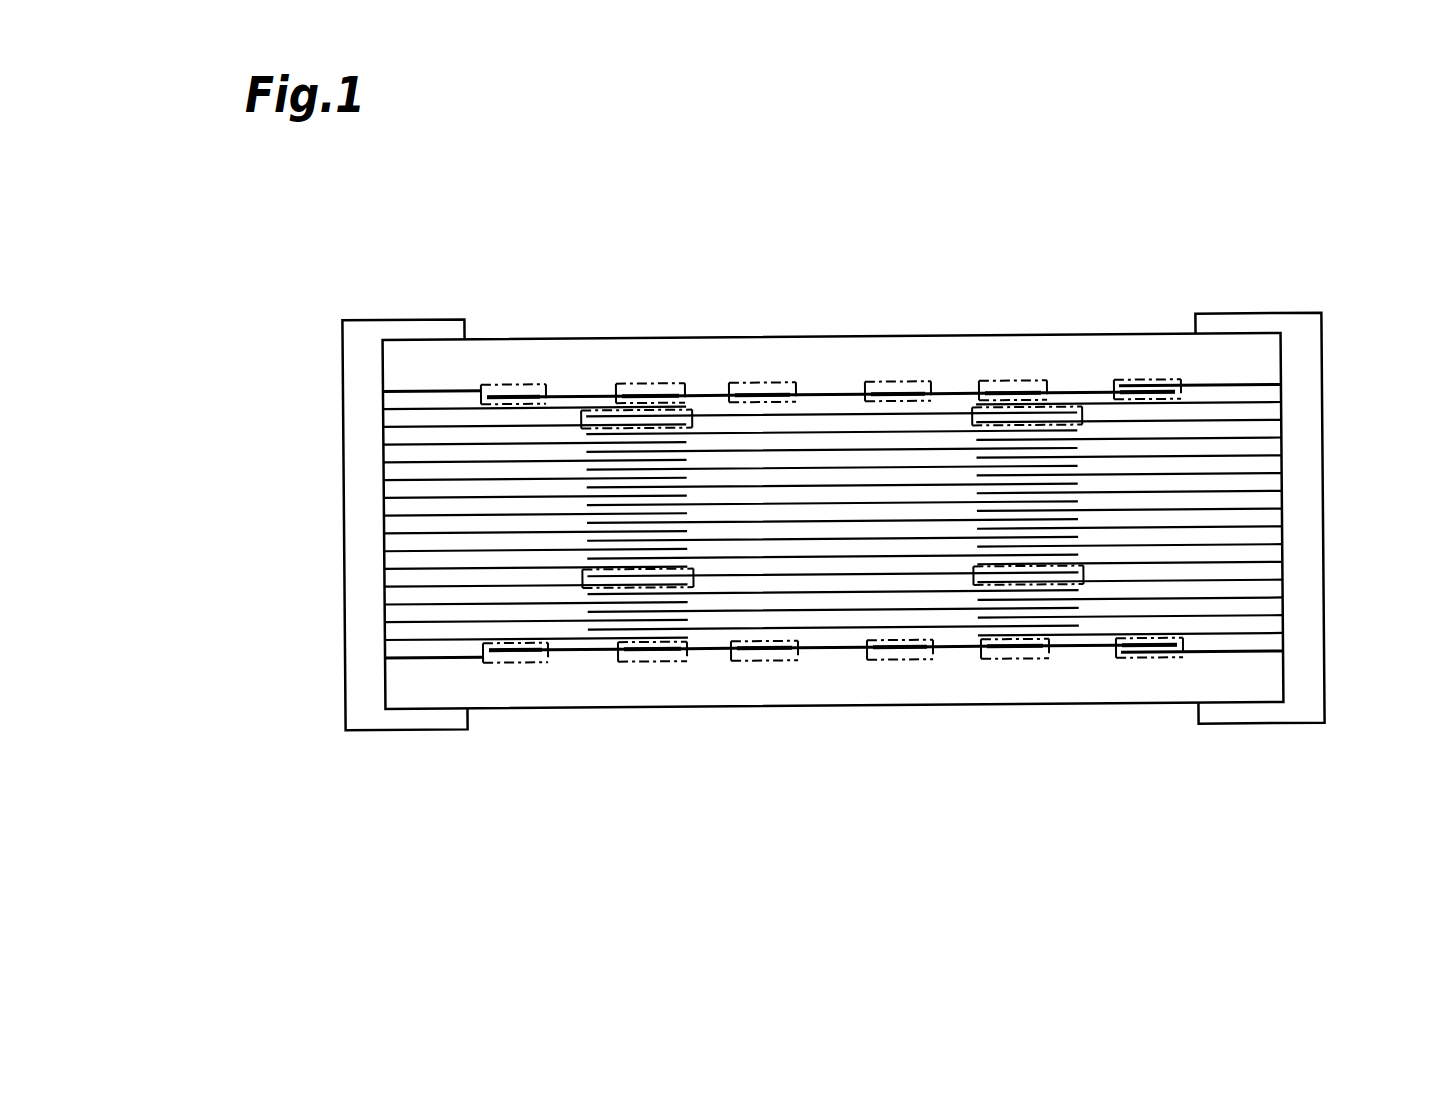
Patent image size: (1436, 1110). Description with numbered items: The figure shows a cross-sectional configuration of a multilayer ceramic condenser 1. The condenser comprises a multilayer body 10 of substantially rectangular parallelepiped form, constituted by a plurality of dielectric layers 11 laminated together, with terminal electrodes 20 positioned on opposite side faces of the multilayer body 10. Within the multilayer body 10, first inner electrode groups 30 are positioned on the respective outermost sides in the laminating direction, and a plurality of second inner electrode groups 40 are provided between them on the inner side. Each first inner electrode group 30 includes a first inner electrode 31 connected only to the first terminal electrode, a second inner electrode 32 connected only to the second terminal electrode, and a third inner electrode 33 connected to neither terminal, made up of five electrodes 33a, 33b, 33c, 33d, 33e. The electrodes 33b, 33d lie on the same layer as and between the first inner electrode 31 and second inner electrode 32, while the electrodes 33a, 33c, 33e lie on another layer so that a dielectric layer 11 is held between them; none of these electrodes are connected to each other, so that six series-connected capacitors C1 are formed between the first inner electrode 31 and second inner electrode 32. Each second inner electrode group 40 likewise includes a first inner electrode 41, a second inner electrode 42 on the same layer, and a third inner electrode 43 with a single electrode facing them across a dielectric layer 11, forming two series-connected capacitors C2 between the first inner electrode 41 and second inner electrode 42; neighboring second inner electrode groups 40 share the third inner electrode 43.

The multilayer ceramic condenser 1 is at (1314, 255).
The multilayer body 10 is at (477, 710).
The dielectric layer 11 is at (402, 646).
The terminal electrode 20 is at (357, 630).
The first inner electrode group 30 is at (1196, 212).
The first inner electrode 31 is at (473, 388).
The second inner electrode 32 is at (1168, 384).
The third inner electrode 33 is at (1095, 250).
The electrode 33a is at (578, 393).
The electrode 33b is at (700, 393).
The electrode 33c is at (828, 393).
The electrode 33d is at (952, 393).
The electrode 33e is at (1062, 393).
The second inner electrode group 40 is at (224, 475).
The first inner electrode 41 is at (411, 493).
The second inner electrode 42 is at (1000, 497).
The third inner electrode 43 is at (715, 502).
The capacitor C1 is at (1127, 382).
The capacitor C2 is at (583, 414).